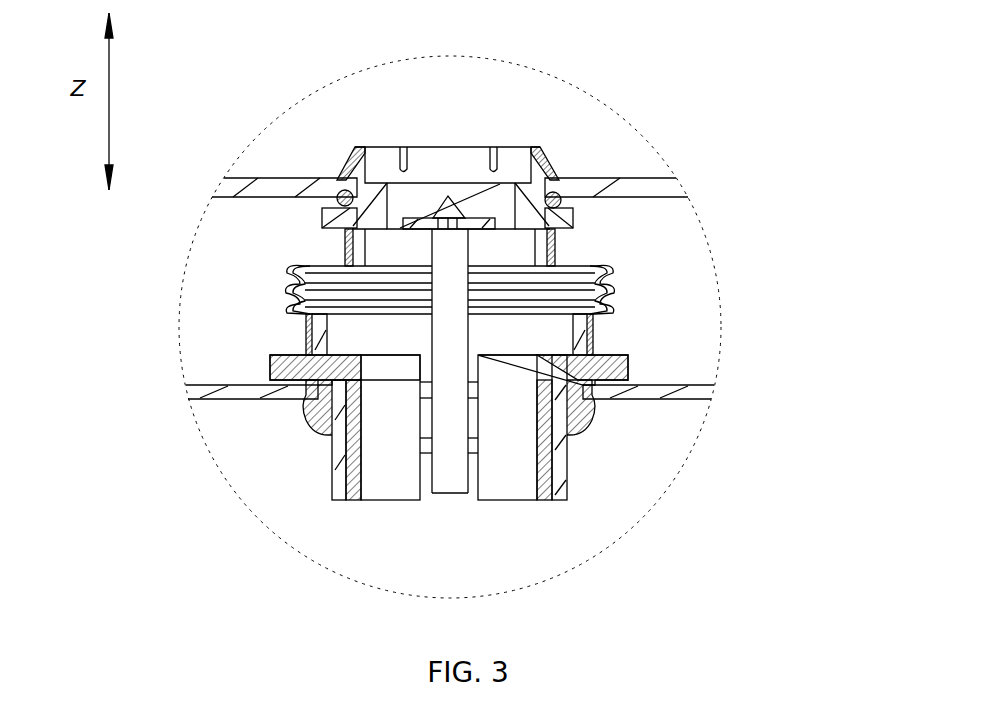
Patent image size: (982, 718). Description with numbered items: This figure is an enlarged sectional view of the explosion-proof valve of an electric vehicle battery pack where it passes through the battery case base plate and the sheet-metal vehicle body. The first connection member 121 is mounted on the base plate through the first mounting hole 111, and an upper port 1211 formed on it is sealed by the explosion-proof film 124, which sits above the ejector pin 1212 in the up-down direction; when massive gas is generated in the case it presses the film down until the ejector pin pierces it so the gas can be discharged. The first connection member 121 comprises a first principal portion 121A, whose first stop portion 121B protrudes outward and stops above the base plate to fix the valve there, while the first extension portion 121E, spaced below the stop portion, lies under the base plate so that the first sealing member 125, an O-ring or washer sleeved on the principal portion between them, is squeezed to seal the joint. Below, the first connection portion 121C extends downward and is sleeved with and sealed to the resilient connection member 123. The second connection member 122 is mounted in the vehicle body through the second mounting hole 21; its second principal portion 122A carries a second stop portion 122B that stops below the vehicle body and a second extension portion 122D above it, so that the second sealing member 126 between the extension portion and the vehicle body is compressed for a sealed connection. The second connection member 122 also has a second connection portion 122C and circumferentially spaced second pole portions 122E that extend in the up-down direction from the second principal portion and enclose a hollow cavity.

The first mounting hole 111 is at (340, 185).
The first sealing member 125 is at (347, 203).
The explosion-proof film 124 is at (443, 167).
The ejector pin 1212 is at (462, 205).
The upper port 1211 is at (552, 166).
The first connection member 121 is at (800, 140).
The first stop portion 121B is at (560, 170).
The first principal portion 121A is at (556, 204).
The first extension portion 121E is at (573, 230).
The first connection portion 121C is at (598, 283).
The resilient connection member 123 is at (292, 299).
The second sealing member 126 is at (290, 356).
The second connection member 122 is at (812, 318).
The second connection portion 122C is at (596, 318).
The second extension portion 122D is at (604, 362).
The second principal portion 122A is at (588, 397).
The second stop portion 122B is at (592, 420).
The second pole portion 122E is at (558, 455).
The second mounting hole 21 is at (313, 398).